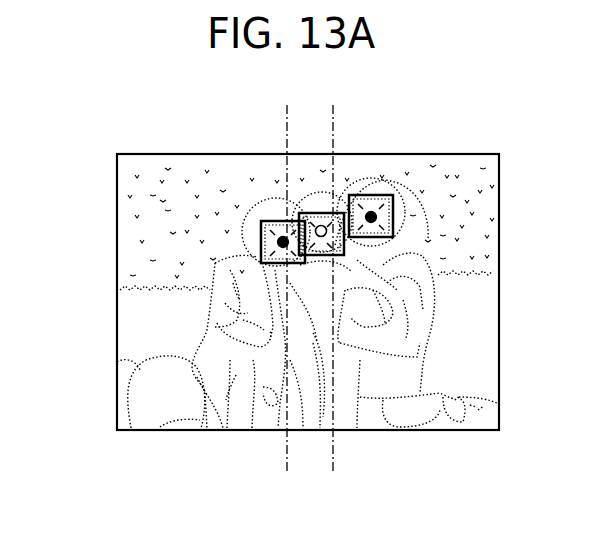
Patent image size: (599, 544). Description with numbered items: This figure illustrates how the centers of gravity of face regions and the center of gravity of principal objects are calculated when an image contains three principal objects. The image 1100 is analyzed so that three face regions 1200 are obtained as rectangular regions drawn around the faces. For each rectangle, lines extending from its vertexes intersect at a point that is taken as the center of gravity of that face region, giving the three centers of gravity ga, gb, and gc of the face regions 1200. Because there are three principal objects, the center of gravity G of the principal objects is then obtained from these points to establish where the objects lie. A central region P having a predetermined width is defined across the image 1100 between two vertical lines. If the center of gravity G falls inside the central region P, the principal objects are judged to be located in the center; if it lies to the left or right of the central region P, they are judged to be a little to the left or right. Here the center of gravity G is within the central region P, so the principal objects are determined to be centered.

The image 1100 is at (118, 180).
The face regions 1200 is at (263, 221).
The center of gravity of the principal objects G is at (340, 213).
The central region P is at (331, 133).
The center of gravity of a face region ga is at (393, 213).
The center of gravity of a face region gb is at (322, 237).
The center of gravity of a face region gc is at (283, 242).